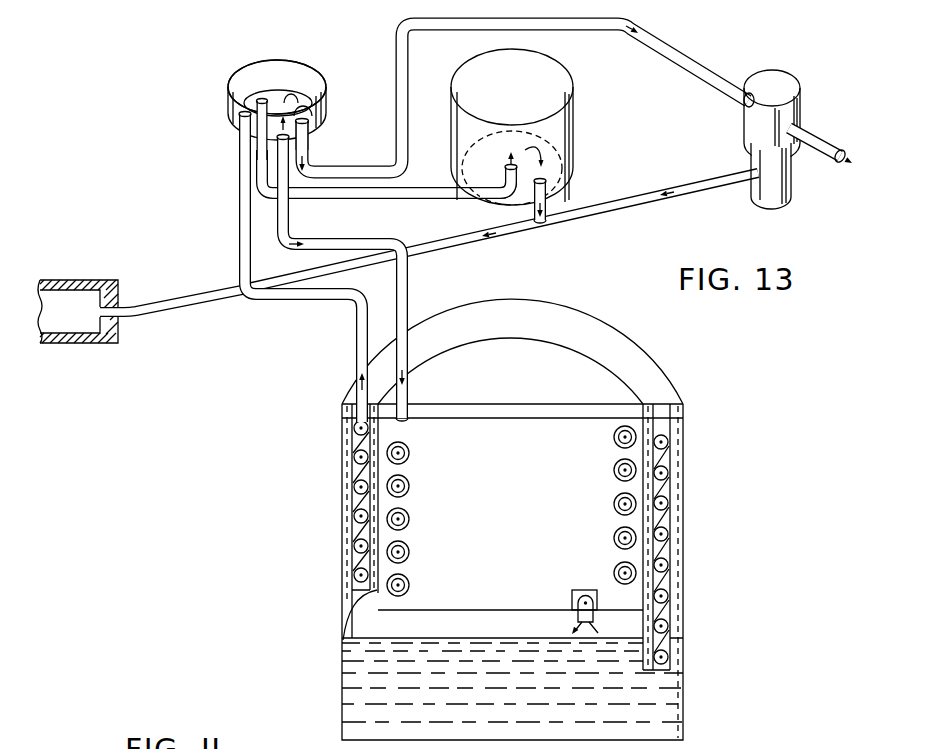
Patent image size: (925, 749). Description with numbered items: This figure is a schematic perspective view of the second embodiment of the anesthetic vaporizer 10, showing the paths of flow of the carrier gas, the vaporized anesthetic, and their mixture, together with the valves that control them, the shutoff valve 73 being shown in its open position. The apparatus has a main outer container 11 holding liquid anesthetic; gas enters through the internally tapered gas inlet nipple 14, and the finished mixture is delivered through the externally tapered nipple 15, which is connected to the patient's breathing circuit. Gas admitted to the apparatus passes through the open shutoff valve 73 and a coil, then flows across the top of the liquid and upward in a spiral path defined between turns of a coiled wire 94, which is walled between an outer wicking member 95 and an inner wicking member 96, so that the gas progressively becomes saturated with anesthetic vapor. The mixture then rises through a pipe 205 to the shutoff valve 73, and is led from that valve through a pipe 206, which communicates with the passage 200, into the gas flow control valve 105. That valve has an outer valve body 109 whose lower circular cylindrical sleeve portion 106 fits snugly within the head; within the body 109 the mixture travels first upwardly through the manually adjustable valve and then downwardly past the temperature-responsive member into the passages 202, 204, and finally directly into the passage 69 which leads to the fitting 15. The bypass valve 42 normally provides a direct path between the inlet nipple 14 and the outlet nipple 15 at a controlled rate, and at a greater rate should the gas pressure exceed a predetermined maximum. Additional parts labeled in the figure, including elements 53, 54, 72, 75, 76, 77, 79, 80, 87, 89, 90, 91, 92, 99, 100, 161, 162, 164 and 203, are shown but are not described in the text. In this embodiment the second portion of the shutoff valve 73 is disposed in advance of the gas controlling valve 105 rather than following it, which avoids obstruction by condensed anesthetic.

The anesthetic vaporizer 10 is at (262, 522).
The main outer container 11 is at (693, 467).
The gas inlet nipple 14 is at (818, 148).
The outlet nipple 15 is at (72, 293).
The bypass valve 42 is at (788, 57).
The supply pipe 53 is at (690, 63).
The inlet tube 54 is at (313, 117).
The passage 69 is at (697, 189).
The distributor drum 72 is at (278, 67).
The shutoff valve 73 is at (244, 55).
The bent tube 75 is at (302, 108).
The feed tube 76 is at (290, 144).
The feed pipe 77 is at (360, 244).
The baffle 79 is at (413, 616).
The nozzle 80 is at (377, 502).
The nozzle 87 is at (410, 453).
The drain 89 is at (587, 592).
The tray bottom 90 is at (457, 611).
The drain outlet 91 is at (574, 621).
The liquid 92 is at (353, 678).
The coiled wire 94 is at (666, 502).
The outer wicking member 95 is at (684, 591).
The inner wicking member 96 is at (647, 457).
The dome 99 is at (345, 402).
The tray 100 is at (505, 409).
The gas flow control valve 105 is at (588, 107).
The sleeve portion 106 is at (573, 133).
The outer valve body 109 is at (552, 72).
The outlet tube 161 is at (229, 107).
The inlet tube 162 is at (254, 97).
The dome 164 is at (292, 95).
The passage 200 is at (503, 168).
The passage 202 is at (548, 181).
The tube outlet 203 is at (540, 222).
The passage 204 is at (548, 204).
The pipe 205 is at (294, 301).
The pipe 206 is at (373, 199).